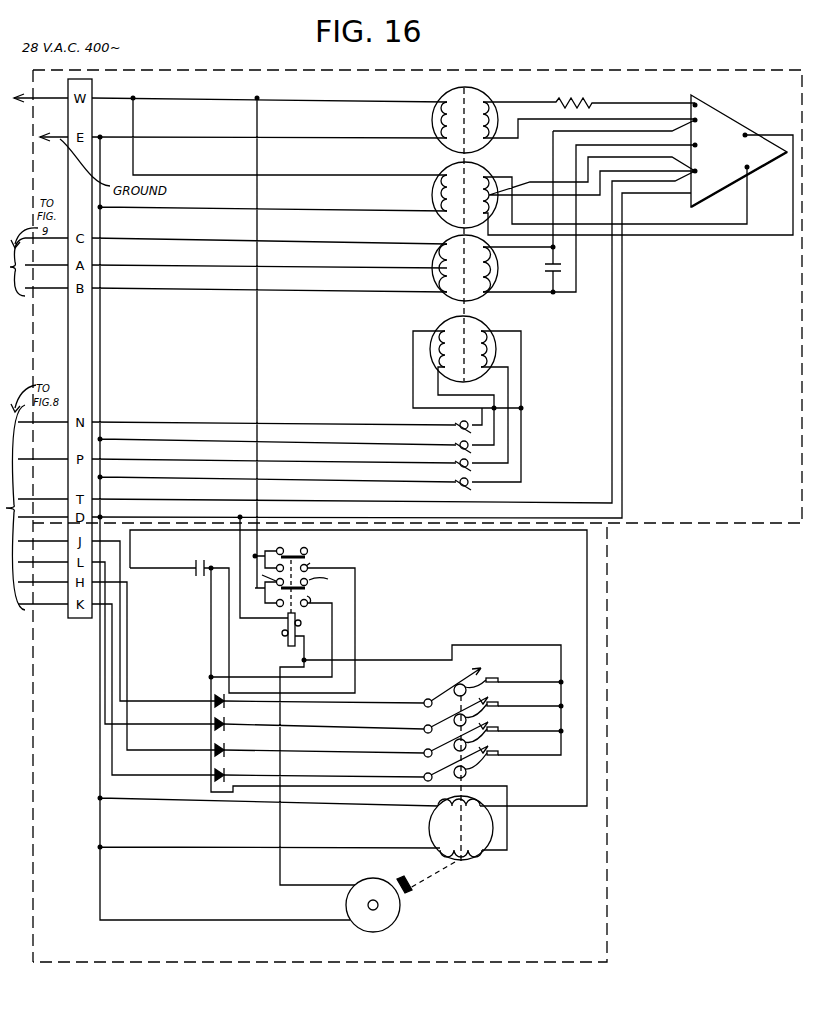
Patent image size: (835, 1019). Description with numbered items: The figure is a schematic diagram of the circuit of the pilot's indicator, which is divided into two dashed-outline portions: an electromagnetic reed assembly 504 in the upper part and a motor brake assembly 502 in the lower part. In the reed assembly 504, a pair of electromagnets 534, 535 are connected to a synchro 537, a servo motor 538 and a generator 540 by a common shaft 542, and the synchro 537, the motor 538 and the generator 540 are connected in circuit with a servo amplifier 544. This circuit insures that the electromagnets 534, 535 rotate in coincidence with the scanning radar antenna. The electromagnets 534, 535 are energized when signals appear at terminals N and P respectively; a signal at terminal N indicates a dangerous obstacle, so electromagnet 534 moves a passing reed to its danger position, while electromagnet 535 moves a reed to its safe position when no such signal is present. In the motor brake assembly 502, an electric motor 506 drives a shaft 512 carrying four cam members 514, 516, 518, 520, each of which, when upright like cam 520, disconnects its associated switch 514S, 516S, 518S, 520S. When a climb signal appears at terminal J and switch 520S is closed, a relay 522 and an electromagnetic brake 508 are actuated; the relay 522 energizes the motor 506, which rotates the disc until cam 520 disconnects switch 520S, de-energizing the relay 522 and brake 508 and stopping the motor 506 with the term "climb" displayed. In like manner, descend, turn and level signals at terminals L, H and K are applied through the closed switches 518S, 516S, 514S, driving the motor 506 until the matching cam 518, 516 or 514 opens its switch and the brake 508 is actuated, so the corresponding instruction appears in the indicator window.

The generator 540 is at (478, 97).
The servo motor 538 is at (447, 168).
The synchro 537 is at (483, 281).
The shaft 542 is at (460, 343).
The electromagnet 534 is at (437, 348).
The electromagnet 535 is at (491, 349).
The servo amplifier 544 is at (732, 128).
The electromagnetic reed assembly 504 is at (694, 521).
The motor brake assembly 502 is at (608, 752).
The relay 522 is at (288, 636).
The cam member 520 is at (496, 676).
The cam member 518 is at (496, 702).
The cam member 516 is at (496, 727).
The cam member 514 is at (496, 752).
The shaft 512 is at (466, 773).
The switch 520S is at (452, 686).
The switch 518S is at (455, 714).
The switch 516S is at (455, 740).
The switch 514S is at (455, 764).
The electric motor 506 is at (478, 851).
The electromagnetic brake 508 is at (385, 923).